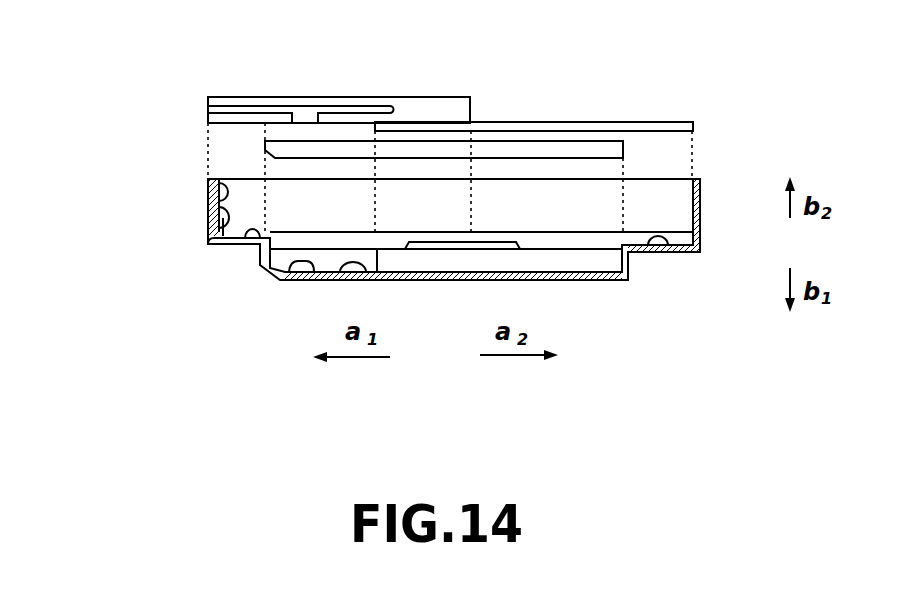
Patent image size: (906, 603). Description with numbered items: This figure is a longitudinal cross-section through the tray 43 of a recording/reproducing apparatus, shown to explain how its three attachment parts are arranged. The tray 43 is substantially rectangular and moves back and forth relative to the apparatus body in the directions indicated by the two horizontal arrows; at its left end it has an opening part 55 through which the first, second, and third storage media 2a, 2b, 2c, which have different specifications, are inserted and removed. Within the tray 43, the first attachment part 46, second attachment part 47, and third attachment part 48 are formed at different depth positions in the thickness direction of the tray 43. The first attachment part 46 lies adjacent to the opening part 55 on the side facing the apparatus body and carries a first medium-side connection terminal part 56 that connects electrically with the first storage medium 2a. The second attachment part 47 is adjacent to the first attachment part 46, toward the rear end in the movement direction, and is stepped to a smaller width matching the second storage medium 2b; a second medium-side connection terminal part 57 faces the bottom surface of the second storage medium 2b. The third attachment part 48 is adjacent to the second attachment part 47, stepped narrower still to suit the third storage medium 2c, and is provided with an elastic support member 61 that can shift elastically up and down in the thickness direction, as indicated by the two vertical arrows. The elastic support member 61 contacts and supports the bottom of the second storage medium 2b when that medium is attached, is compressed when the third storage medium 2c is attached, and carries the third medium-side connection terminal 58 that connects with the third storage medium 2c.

The tray 43 is at (187, 252).
The first storage medium 2a is at (378, 97).
The second storage medium 2b is at (645, 122).
The third storage medium 2c is at (308, 141).
The second medium-side connection terminal part 57 is at (500, 238).
The elastic support member 61 is at (596, 243).
The opening part 55 is at (230, 183).
The first medium-side connection terminal part 56 is at (208, 207).
The first attachment part 46 is at (241, 244).
The third medium-side connection terminal 58 is at (283, 283).
The third attachment part 48 is at (328, 280).
The second attachment part 47 is at (670, 253).